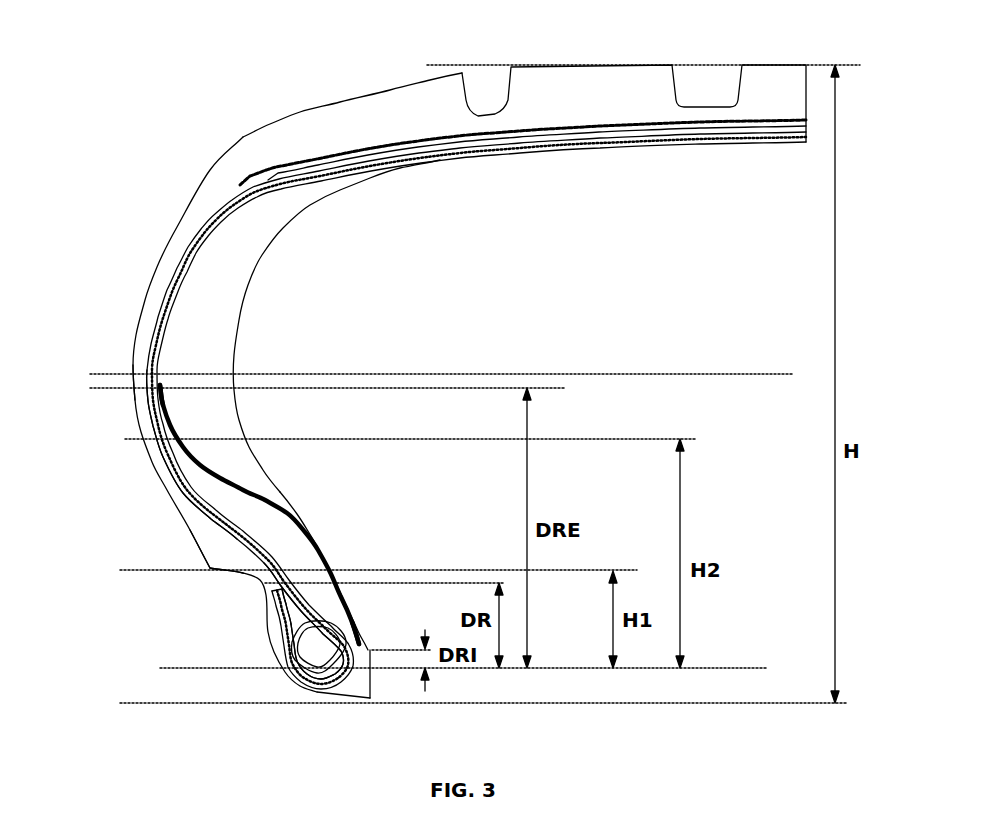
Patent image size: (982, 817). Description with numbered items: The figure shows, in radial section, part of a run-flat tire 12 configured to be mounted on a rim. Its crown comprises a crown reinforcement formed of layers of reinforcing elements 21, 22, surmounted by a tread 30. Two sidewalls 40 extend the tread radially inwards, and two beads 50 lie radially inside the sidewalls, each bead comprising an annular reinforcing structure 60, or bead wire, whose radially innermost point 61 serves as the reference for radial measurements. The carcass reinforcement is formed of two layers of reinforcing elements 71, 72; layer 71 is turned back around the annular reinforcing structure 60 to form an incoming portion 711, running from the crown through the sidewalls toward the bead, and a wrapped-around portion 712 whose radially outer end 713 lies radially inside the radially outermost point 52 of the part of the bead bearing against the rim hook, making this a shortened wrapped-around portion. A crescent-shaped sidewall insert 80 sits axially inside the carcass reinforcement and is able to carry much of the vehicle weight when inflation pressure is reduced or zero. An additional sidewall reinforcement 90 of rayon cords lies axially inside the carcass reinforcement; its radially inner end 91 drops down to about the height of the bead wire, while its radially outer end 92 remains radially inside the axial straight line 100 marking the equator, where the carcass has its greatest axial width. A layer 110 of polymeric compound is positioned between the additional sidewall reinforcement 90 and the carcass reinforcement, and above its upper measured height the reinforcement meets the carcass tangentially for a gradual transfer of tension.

The run-flat tire 12 is at (238, 79).
The layer of reinforcing elements 21 is at (347, 142).
The layer of reinforcing elements 22 is at (264, 184).
The tread 30 is at (580, 90).
The sidewall 40 is at (150, 295).
The bead 50 is at (350, 684).
The radially outermost point of the bead part bearing against the rim hook 52 is at (199, 576).
The annular reinforcing structure 60 is at (316, 657).
The radially innermost point of the annular reinforcing structure 61 is at (318, 685).
The layer of reinforcing elements 71 is at (157, 360).
The layer of reinforcing elements 72 is at (147, 360).
The sidewall insert 80 is at (227, 302).
The additional sidewall reinforcement 90 is at (255, 493).
The radially inner end of the additional sidewall reinforcement 91 is at (368, 638).
The radially outer end of the additional sidewall reinforcement 92 is at (178, 383).
The axial straight line 100 is at (583, 373).
The layer of polymeric compound 110 is at (275, 540).
The incoming portion 711 is at (207, 516).
The wrapped-around portion 712 is at (292, 641).
The radially outer end of the wrapped-around portion 713 is at (263, 586).